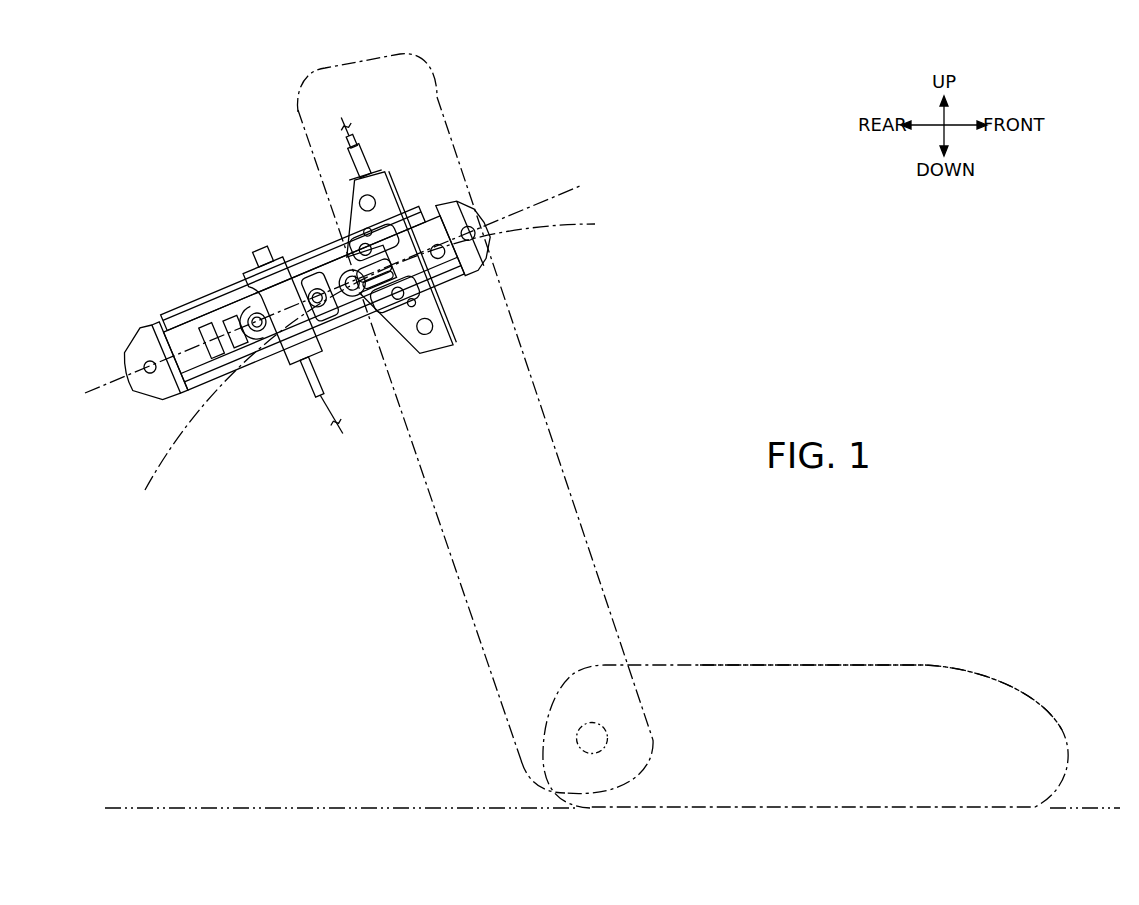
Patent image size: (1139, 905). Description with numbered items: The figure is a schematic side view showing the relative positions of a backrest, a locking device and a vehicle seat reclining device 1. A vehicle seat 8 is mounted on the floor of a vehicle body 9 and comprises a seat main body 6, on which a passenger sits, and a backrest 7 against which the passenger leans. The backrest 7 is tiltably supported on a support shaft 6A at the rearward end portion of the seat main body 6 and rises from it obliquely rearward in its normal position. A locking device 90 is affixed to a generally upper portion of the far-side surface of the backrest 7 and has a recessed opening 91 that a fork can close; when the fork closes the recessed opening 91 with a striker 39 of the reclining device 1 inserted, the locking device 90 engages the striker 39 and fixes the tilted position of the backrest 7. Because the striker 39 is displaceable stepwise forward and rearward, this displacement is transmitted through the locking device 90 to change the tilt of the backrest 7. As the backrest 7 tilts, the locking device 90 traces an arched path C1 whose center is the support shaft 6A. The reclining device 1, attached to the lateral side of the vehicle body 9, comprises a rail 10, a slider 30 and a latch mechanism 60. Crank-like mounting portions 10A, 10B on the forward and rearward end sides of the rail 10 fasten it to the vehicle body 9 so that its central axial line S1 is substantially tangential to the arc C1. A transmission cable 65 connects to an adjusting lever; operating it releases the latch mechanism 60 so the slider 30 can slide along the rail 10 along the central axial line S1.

The vehicle seat reclining device 1 is at (218, 240).
The seat main body 6 is at (990, 708).
The support shaft 6A is at (590, 738).
The backrest 7 is at (560, 553).
The vehicle seat 8 is at (937, 662).
The vehicle body 9 is at (433, 820).
The rail 10 is at (176, 303).
The mounting portion 10A is at (465, 215).
The mounting portion 10B is at (147, 383).
The slider 30 is at (341, 272).
The striker 39 is at (345, 295).
The latch mechanism 60 is at (278, 382).
The transmission cable 65 is at (323, 417).
The locking device 90 is at (396, 185).
The recessed opening 91 is at (320, 276).
The central axial line S1 is at (580, 190).
The arched path C1 is at (596, 224).